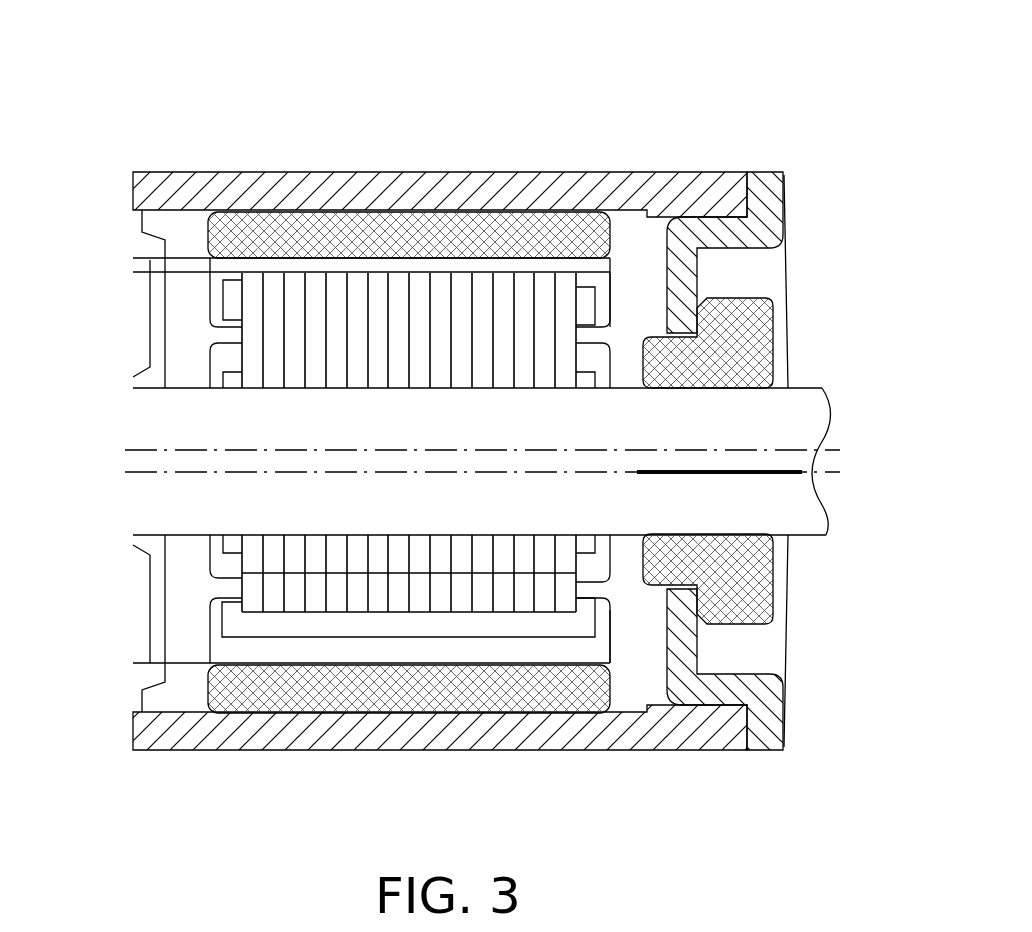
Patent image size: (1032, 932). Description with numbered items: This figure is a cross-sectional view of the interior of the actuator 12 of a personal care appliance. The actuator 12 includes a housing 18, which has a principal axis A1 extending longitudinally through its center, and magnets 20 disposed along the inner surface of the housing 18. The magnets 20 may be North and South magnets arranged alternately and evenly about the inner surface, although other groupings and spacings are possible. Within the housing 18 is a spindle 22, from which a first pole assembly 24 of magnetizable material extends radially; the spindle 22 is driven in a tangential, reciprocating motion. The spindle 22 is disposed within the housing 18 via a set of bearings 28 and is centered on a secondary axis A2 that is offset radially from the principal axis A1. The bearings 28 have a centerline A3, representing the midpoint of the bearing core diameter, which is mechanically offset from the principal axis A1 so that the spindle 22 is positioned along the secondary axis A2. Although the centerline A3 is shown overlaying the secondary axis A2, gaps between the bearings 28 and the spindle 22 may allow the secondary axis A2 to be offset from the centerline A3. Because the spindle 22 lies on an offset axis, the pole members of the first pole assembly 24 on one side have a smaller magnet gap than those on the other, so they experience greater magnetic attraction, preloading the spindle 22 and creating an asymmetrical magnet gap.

The actuator 12 is at (692, 106).
The housing 18 is at (548, 731).
The magnets 20 is at (370, 232).
The spindle 22 is at (812, 425).
The first pole assembly 24 is at (458, 282).
The bearings 28 is at (735, 345).
The principal axis A1 is at (165, 450).
The secondary axis A2 is at (165, 472).
The centerline A3 is at (750, 475).